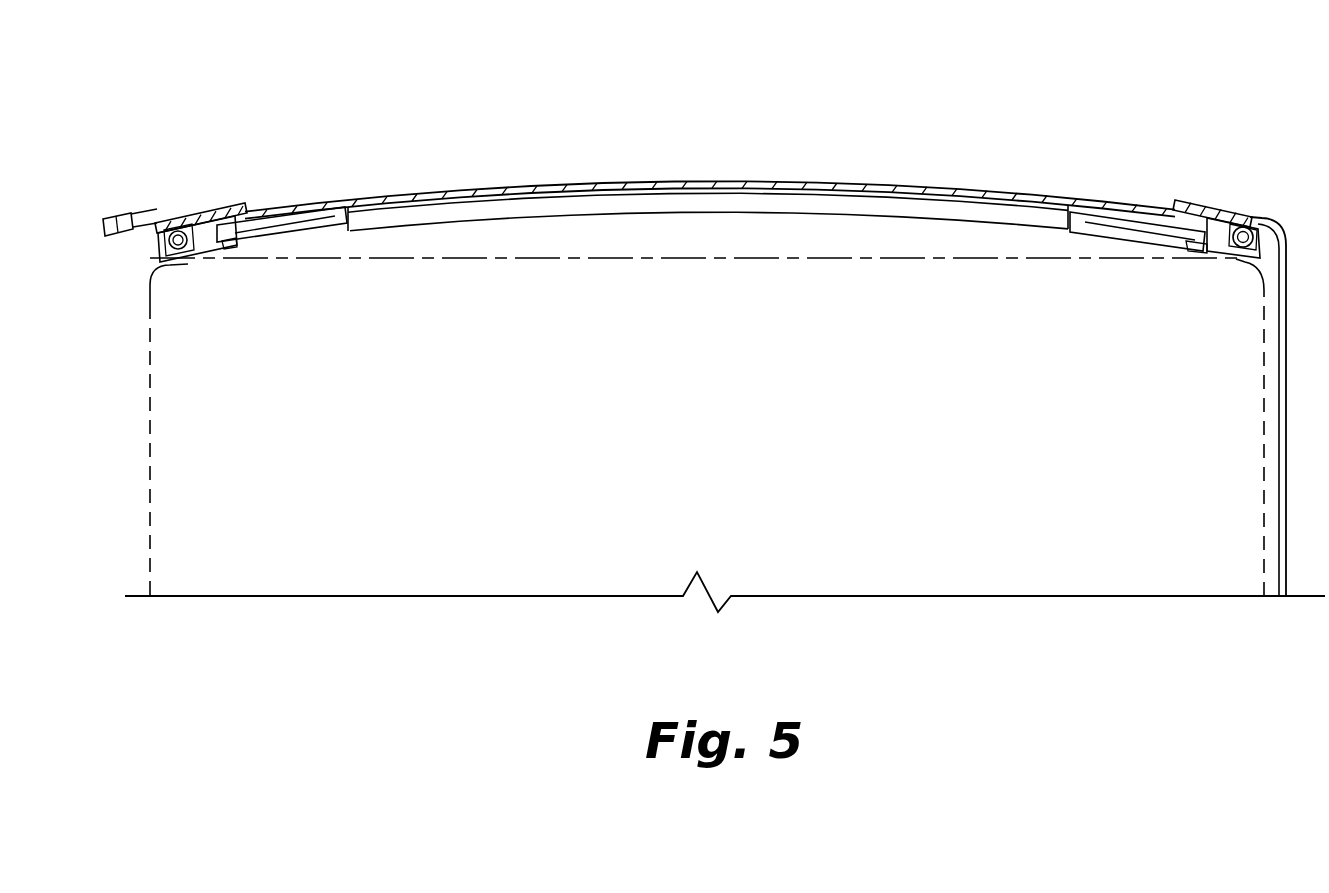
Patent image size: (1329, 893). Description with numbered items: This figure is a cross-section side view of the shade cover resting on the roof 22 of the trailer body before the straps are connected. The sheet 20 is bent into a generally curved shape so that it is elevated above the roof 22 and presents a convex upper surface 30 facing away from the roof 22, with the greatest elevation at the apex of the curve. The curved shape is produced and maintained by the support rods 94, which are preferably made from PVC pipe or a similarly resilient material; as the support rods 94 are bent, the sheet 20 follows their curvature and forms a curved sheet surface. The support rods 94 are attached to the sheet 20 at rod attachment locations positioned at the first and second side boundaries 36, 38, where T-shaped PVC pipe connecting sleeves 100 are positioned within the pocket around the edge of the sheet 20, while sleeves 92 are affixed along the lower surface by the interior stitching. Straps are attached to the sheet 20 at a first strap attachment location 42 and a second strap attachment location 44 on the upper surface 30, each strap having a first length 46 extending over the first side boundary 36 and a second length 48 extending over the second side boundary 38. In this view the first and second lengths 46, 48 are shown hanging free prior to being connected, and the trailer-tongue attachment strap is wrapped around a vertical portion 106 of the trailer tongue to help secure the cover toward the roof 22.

The sheet 20 is at (740, 178).
The roof 22 is at (694, 254).
The convex upper surface 30 is at (680, 168).
The first side boundary 36 is at (1264, 243).
The second side boundary 38 is at (155, 246).
The first strap attachment location 42 is at (1177, 187).
The second strap attachment location 44 is at (212, 188).
The first length 46 is at (1200, 225).
The second length 48 is at (156, 212).
The sleeves 92 is at (666, 210).
The support rods 94 is at (297, 216).
The connecting sleeves 100 is at (1222, 230).
The vertical portion 106 is at (204, 245).